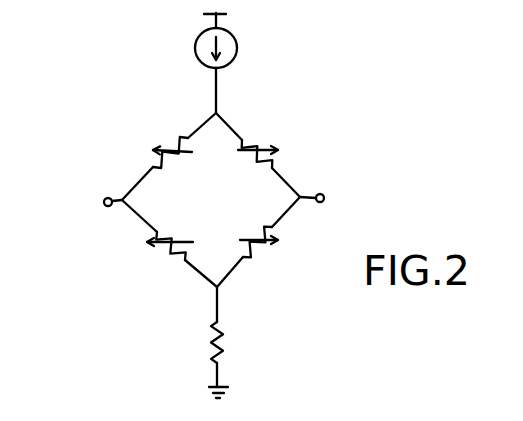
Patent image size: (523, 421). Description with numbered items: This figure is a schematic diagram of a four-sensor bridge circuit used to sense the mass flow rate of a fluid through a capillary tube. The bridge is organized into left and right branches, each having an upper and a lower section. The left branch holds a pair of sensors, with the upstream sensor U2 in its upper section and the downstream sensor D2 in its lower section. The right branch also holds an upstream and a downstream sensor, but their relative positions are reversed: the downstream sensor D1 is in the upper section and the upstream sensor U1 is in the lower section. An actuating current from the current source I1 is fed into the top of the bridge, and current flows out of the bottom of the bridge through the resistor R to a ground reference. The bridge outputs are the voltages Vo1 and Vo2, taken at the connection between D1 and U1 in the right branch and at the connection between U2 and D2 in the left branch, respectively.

The current source I1 is at (196, 40).
The upstream sensor U2 is at (159, 133).
The downstream sensor D1 is at (270, 134).
The downstream sensor D2 is at (160, 261).
The upstream sensor U1 is at (272, 257).
The resistor R is at (229, 344).
The bridge output voltage Vo1 is at (341, 196).
The bridge output voltage Vo2 is at (89, 195).